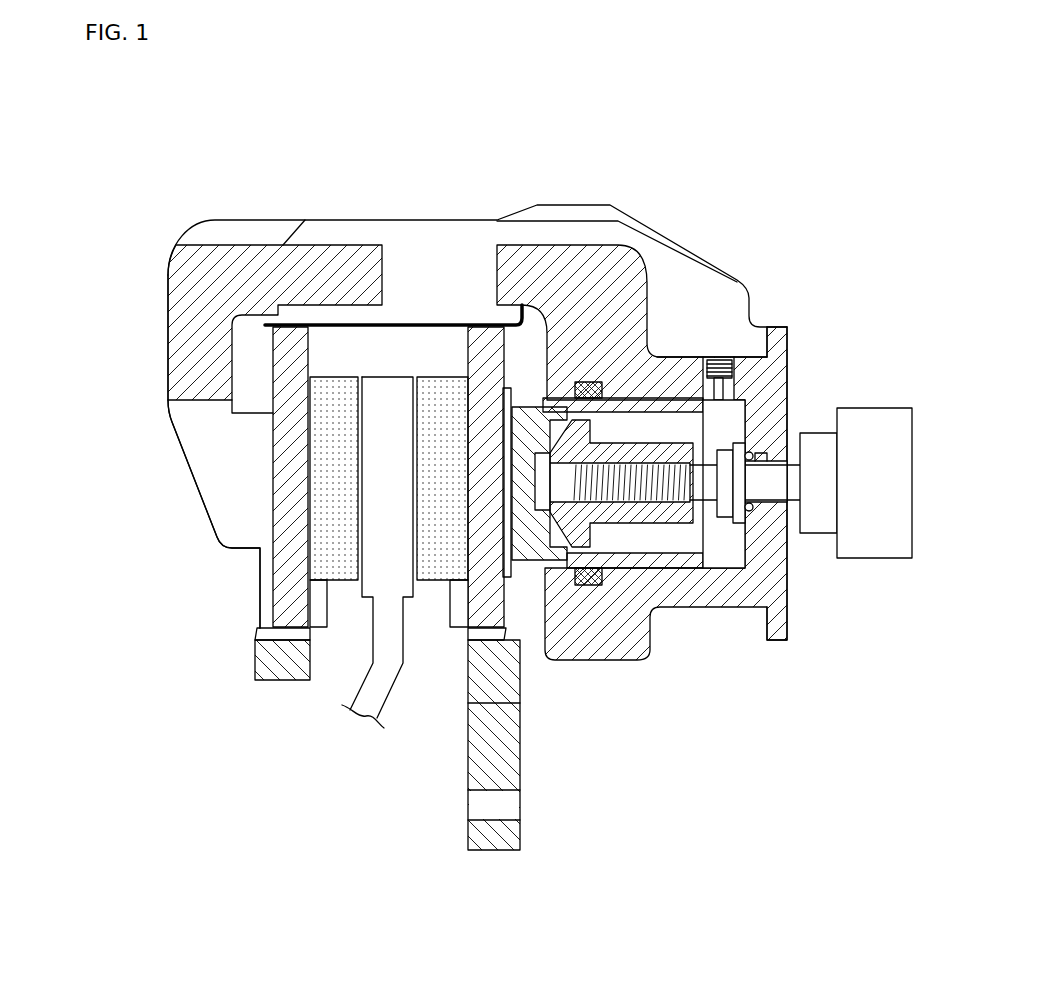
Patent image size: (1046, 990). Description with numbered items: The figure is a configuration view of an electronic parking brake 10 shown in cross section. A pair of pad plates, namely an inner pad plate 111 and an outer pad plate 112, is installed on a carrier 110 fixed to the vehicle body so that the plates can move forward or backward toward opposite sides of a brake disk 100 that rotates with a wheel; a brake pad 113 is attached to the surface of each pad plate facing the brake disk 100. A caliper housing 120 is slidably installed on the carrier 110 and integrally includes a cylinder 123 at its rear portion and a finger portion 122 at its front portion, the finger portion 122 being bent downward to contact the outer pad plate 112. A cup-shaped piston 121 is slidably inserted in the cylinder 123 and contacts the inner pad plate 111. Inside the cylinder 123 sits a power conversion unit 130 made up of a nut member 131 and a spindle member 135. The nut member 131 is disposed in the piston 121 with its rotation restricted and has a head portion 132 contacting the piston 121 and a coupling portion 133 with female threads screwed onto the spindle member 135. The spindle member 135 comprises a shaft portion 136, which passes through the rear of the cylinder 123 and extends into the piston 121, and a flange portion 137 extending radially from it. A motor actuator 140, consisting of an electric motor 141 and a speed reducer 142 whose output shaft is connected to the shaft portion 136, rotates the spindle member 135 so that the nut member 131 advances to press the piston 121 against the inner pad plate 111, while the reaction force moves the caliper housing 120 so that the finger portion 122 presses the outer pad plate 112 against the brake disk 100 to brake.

The electronic parking brake 10 is at (522, 104).
The brake disk 100 is at (378, 700).
The carrier 110 is at (480, 770).
The inner pad plate 111 is at (470, 620).
The outer pad plate 112 is at (285, 578).
The brake pad 113 is at (340, 583).
The caliper housing 120 is at (372, 242).
The piston 121 is at (517, 562).
The finger portion 122 is at (197, 455).
The cylinder 123 is at (778, 327).
The power conversion unit 130 is at (657, 420).
The nut member 131 is at (653, 767).
The head portion 132 is at (568, 567).
The coupling portion 133 is at (643, 517).
The spindle member 135 is at (810, 732).
The shaft portion 136 is at (753, 490).
The flange portion 137 is at (725, 520).
The motor actuator 140 is at (805, 353).
The electric motor 141 is at (863, 413).
The speed reducer 142 is at (822, 437).